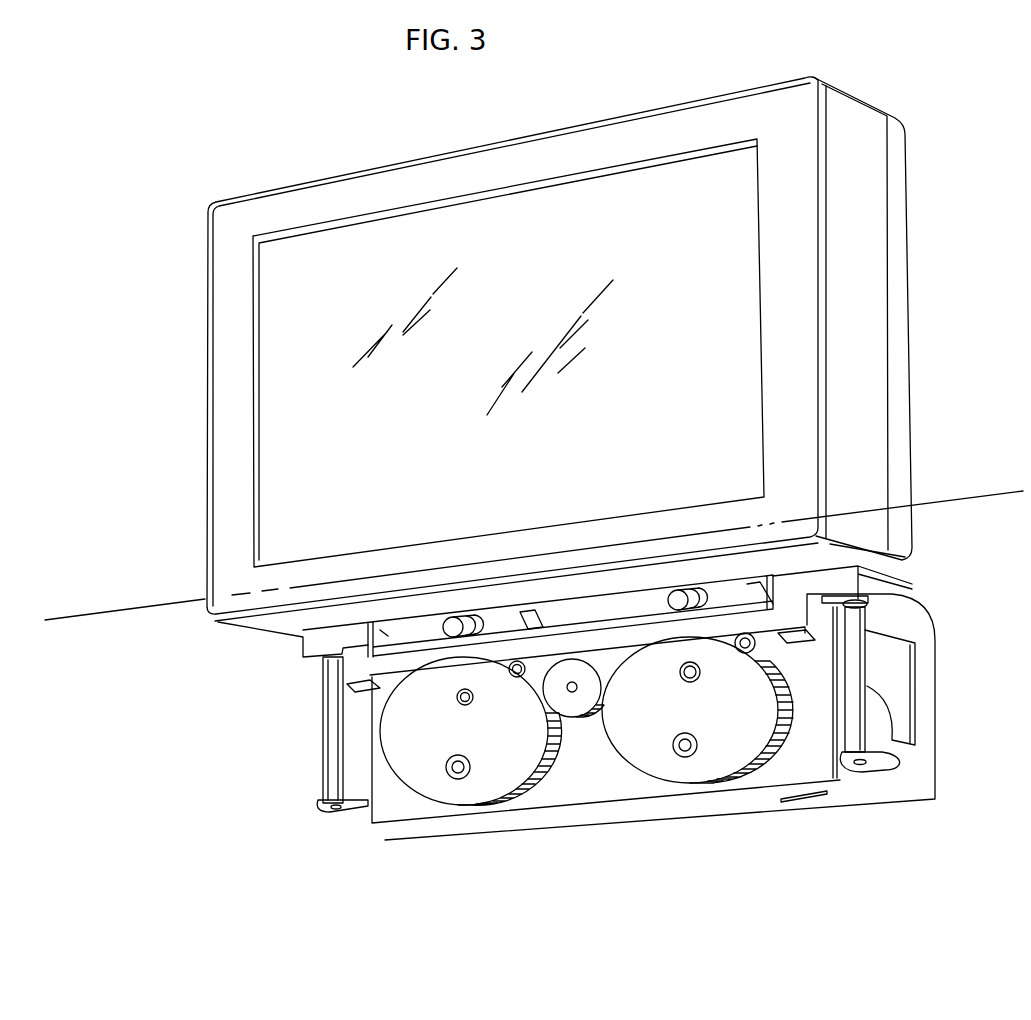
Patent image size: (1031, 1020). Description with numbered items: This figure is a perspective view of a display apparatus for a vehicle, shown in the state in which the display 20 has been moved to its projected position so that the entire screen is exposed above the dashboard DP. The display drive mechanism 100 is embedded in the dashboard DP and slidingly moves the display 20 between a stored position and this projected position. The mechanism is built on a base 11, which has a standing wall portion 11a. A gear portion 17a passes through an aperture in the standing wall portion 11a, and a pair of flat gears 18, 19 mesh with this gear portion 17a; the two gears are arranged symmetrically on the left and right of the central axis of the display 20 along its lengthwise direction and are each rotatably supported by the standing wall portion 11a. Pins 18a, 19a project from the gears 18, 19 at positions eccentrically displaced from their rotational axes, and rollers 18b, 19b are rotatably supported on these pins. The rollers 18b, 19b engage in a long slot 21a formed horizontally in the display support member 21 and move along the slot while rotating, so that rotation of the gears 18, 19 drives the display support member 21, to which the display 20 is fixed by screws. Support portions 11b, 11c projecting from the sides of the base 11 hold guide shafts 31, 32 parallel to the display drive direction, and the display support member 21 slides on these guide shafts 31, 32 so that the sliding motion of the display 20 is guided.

The display 20 is at (278, 186).
The dashboard DP is at (72, 624).
The display support member 21 is at (300, 650).
The long slot 21a is at (348, 684).
The roller 19b is at (470, 616).
The roller 18b is at (688, 590).
The pin 19a is at (437, 630).
The pin 18a is at (688, 592).
The gear 19 is at (432, 783).
The gear 18 is at (758, 765).
The gear portion 17a is at (587, 717).
The display drive mechanism 100 is at (610, 782).
The base 11 is at (938, 763).
The standing wall portion 11a is at (822, 755).
The support portion 11b is at (884, 770).
The support portion 11c is at (350, 812).
The guide shaft 31 is at (855, 680).
The guide shaft 32 is at (322, 757).